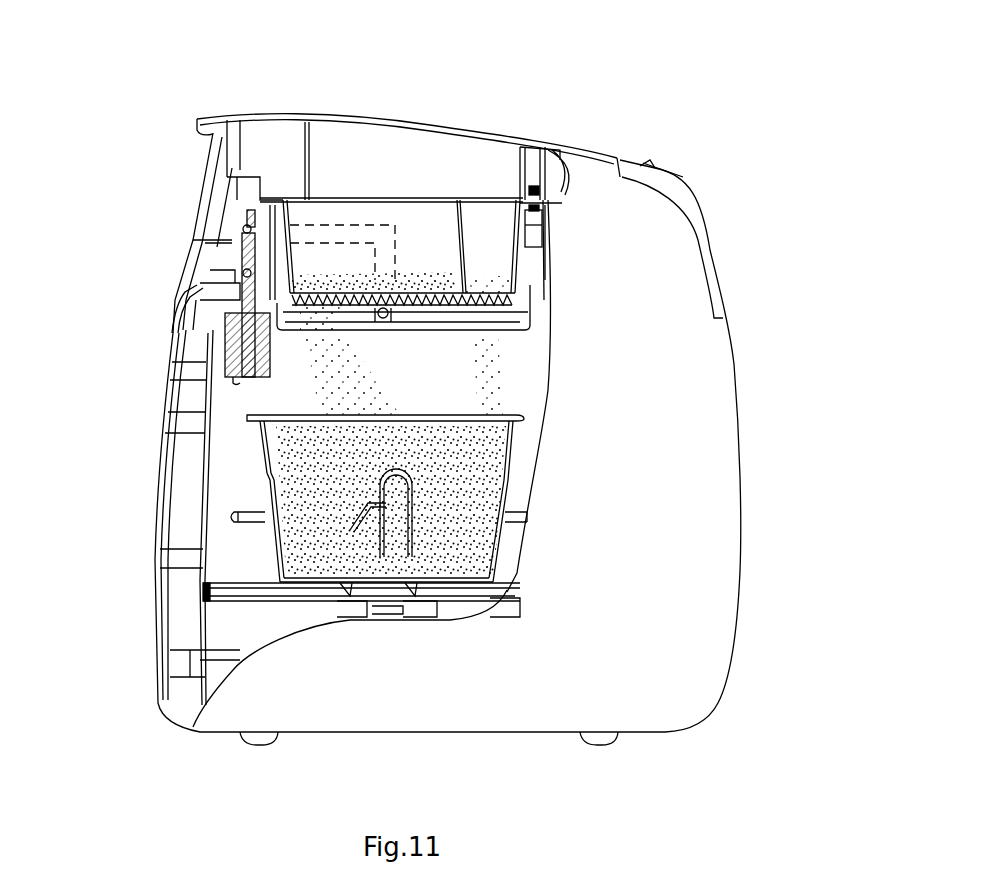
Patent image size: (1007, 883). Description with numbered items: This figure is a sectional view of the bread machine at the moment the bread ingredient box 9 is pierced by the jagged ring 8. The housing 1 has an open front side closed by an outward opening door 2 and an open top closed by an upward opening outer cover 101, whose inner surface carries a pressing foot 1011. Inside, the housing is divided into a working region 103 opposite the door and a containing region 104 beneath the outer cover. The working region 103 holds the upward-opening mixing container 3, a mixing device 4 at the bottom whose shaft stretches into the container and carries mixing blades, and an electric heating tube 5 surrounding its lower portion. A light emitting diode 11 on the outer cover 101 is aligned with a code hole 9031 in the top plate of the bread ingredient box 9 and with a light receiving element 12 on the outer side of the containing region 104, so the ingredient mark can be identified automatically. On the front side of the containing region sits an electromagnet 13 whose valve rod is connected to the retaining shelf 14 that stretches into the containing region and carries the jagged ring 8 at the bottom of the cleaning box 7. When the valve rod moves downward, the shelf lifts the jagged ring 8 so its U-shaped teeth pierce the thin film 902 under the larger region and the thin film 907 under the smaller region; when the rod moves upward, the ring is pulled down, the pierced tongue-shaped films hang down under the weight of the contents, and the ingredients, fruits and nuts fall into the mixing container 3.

The housing 1 is at (732, 368).
The door 2 is at (160, 562).
The mixing container 3 is at (277, 572).
The mixing device 4 is at (440, 540).
The electric heating tube 5 is at (233, 518).
The cleaning box 7 is at (258, 187).
The jagged ring 8 is at (357, 300).
The bread ingredient box 9 is at (282, 197).
The light emitting diode 11 is at (537, 195).
The light receiving element 12 is at (537, 222).
The electromagnet 13 is at (220, 377).
The retaining shelf 14 is at (273, 233).
The outer cover 101 is at (418, 124).
The working region 103 is at (247, 433).
The containing region 104 is at (277, 297).
The thin film 902 is at (215, 358).
The thin film 907 is at (475, 339).
The pressing foot 1011 is at (312, 152).
The code hole 9031 is at (565, 195).